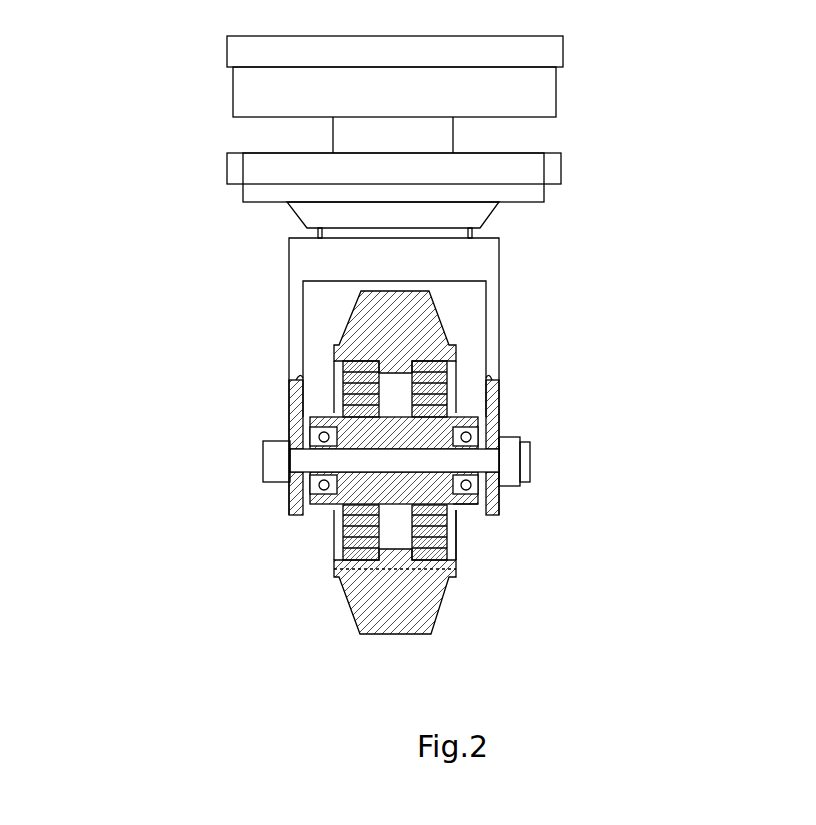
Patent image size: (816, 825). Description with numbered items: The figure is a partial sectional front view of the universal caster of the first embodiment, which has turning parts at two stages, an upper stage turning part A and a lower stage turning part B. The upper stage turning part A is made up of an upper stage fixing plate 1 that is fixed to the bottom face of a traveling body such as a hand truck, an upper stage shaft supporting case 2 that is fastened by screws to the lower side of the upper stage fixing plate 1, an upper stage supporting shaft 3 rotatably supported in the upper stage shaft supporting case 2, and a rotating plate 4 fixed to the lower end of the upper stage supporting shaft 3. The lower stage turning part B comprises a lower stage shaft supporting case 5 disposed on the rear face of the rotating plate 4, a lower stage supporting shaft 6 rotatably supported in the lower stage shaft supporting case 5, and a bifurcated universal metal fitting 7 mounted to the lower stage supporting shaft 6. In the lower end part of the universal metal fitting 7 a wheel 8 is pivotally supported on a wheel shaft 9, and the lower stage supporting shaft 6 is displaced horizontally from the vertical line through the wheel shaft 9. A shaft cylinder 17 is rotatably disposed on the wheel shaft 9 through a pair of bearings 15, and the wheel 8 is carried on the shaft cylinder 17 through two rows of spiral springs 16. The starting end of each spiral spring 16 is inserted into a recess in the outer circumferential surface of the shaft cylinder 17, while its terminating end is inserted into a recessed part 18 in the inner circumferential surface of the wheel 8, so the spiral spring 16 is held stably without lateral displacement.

The upper stage fixing plate 1 is at (558, 48).
The upper stage shaft supporting case 2 is at (543, 93).
The upper stage supporting shaft 3 is at (355, 132).
The rotating plate 4 is at (553, 165).
The lower stage shaft supporting case 5 is at (478, 212).
The lower stage supporting shaft 6 is at (328, 232).
The universal metal fitting 7 is at (493, 312).
The wheel 8 is at (367, 603).
The wheel shaft 9 is at (270, 459).
The bearings 15 is at (300, 439).
The spiral spring 16 is at (437, 397).
The shaft cylinder 17 is at (467, 506).
The recessed part 18 is at (457, 548).
The upper stage turning part A is at (203, 82).
The lower stage turning part B is at (205, 194).